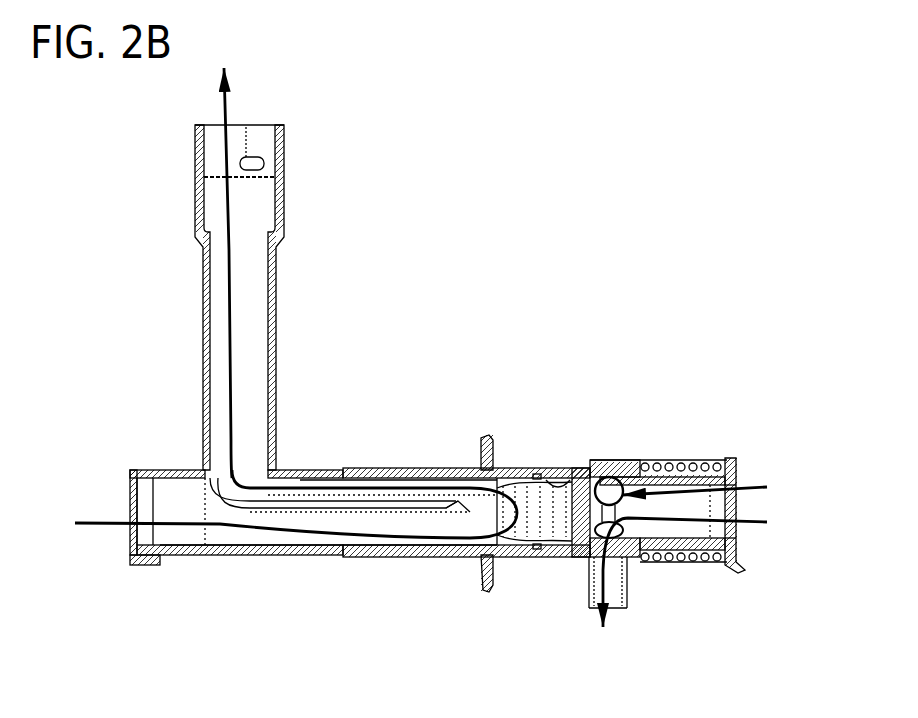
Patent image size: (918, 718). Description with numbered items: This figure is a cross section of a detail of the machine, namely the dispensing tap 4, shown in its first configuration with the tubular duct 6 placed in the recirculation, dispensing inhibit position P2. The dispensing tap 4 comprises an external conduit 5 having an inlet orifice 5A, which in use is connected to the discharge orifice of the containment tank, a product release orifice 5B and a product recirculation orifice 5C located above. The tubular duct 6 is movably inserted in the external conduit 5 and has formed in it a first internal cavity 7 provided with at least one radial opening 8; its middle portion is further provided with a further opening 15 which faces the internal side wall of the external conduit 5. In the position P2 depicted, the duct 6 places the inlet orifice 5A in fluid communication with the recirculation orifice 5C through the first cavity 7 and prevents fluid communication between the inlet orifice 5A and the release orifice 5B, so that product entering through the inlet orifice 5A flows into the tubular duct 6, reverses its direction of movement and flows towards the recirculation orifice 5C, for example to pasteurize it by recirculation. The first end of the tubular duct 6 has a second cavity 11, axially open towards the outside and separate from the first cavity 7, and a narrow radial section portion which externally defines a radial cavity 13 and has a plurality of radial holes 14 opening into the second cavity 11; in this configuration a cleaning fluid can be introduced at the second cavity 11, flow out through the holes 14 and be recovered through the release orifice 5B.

The dispensing tap 4 is at (508, 268).
The external conduit 5 is at (200, 371).
The inlet orifice 5A is at (118, 489).
The product release orifice 5B is at (626, 608).
The product recirculation orifice 5C is at (262, 122).
The tubular duct 6 is at (186, 556).
The first internal cavity 7 is at (188, 513).
The radial opening 8 is at (557, 472).
The second cavity 11 is at (626, 506).
The radial cavity 13 is at (614, 470).
The radial holes 14 is at (630, 512).
The further opening 15 is at (469, 511).
The recirculation, dispensing inhibit position P2 is at (366, 380).